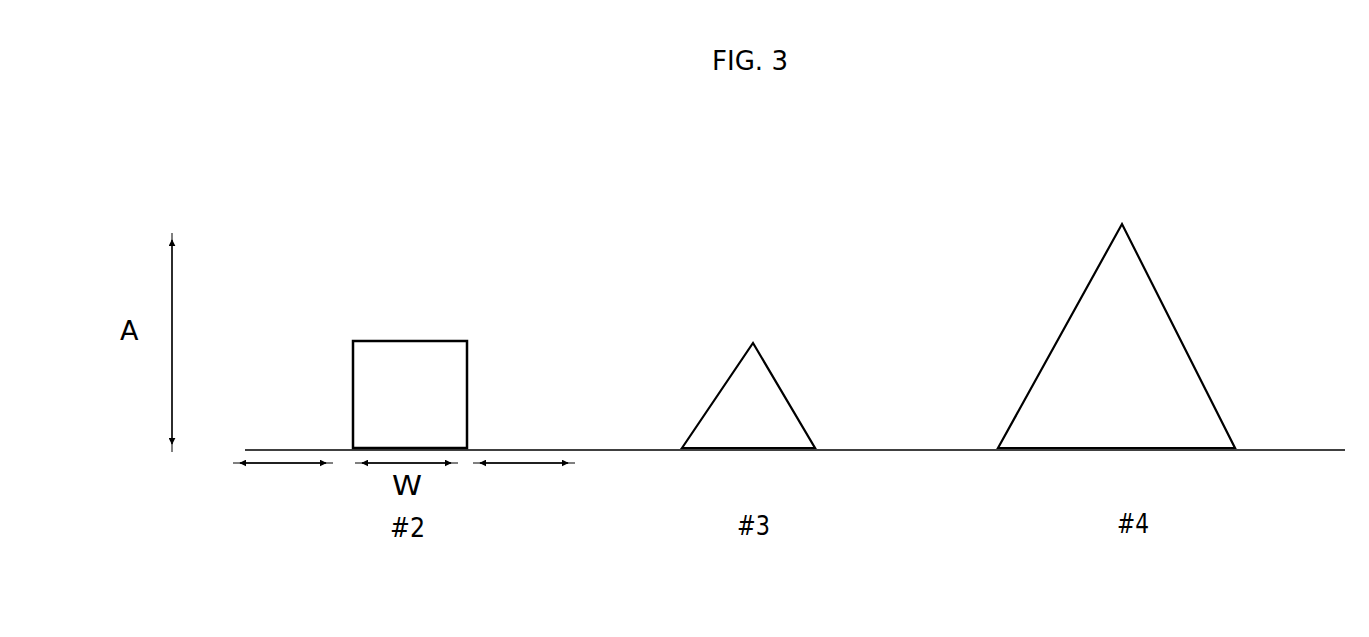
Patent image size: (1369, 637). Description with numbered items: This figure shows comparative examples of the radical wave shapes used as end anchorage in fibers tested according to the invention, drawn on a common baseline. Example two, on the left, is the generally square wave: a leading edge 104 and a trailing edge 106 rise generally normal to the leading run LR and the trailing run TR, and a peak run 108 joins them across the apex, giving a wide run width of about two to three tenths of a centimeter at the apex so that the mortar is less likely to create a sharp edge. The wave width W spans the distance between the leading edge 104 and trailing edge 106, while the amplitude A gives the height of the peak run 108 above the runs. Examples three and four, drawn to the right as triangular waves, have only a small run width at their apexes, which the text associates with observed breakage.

The leading edge 104 is at (338, 403).
The trailing edge 106 is at (478, 391).
The peak run 108 is at (408, 331).